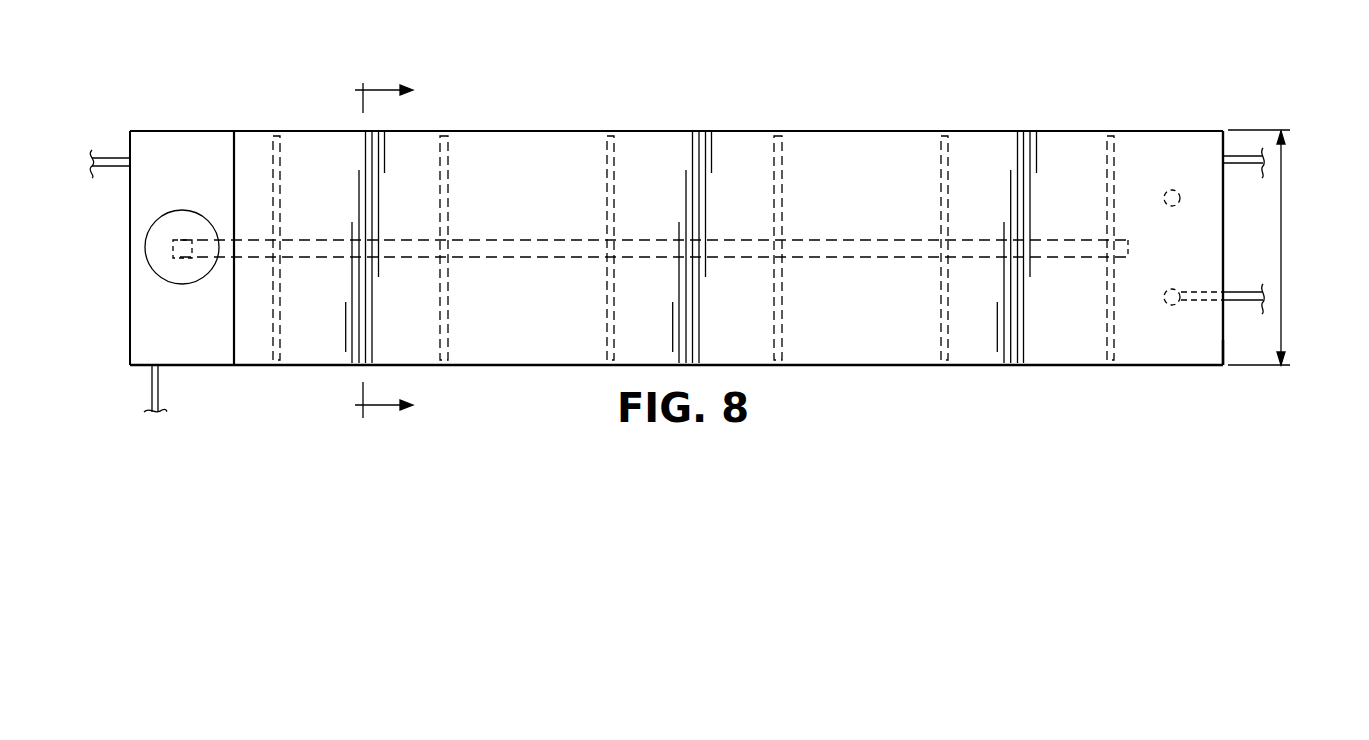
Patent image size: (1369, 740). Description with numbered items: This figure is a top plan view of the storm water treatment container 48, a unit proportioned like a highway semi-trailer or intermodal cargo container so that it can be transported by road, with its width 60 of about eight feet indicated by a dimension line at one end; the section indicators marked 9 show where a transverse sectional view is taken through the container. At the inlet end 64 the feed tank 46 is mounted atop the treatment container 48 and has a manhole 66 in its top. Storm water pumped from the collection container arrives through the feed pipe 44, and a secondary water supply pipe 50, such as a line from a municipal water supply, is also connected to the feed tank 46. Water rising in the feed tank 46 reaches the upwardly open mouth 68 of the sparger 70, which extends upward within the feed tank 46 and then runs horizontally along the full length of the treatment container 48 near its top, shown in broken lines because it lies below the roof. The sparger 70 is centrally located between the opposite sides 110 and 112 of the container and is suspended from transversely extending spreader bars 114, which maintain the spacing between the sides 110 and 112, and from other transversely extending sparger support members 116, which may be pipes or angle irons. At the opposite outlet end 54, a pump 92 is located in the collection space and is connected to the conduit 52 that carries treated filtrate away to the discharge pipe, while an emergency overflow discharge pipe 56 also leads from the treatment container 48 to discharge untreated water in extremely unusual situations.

The treatment container 48 is at (918, 66).
The side 110 is at (872, 129).
The side 112 is at (490, 367).
The feed tank 46 is at (186, 130).
The manhole 66 is at (208, 213).
The upwardly open mouth 68 is at (181, 262).
The sparger 70 is at (528, 237).
The sparger support member 116 is at (288, 142).
The spreader bar 114 is at (455, 142).
The secondary water supply pipe 50 is at (112, 152).
The feed pipe 44 is at (161, 392).
The inlet end 64 is at (130, 343).
The emergency overflow discharge pipe 56 is at (1245, 152).
The conduit 52 is at (1245, 290).
The pump 92 is at (1172, 206).
The outlet end 54 is at (1225, 340).
The width 60 is at (1283, 189).
The section line 9- 9 is at (384, 251).